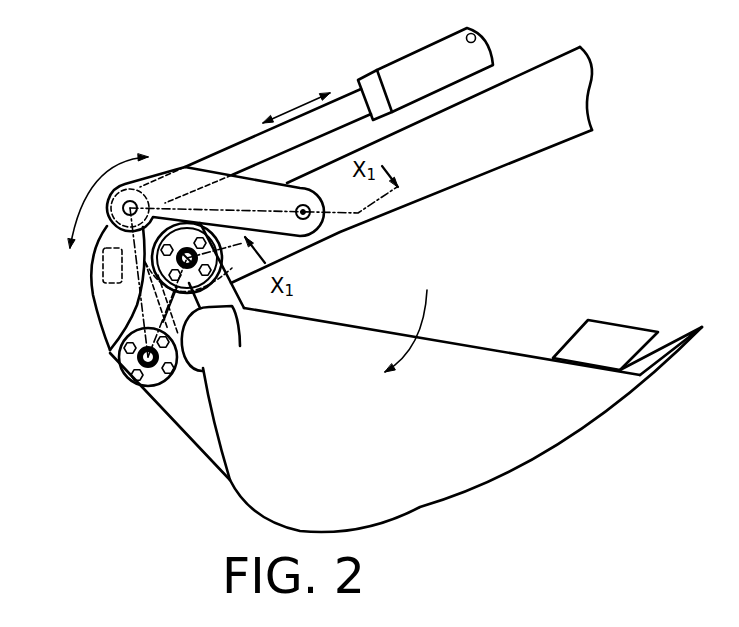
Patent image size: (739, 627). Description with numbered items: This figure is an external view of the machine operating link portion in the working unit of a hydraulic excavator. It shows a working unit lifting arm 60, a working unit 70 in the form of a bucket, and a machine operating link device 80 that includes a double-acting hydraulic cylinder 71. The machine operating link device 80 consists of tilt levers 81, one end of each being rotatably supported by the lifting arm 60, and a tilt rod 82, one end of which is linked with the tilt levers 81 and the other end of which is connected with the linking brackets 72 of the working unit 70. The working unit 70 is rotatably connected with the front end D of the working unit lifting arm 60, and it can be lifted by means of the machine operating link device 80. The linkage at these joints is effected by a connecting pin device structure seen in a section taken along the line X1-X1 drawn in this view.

The working unit lifting arm 60 is at (482, 157).
The working unit 70 is at (487, 367).
The double-acting hydraulic cylinder 71 is at (244, 153).
The linking brackets 72 is at (167, 412).
The machine operating link device 80 is at (167, 117).
The tilt levers 81 is at (184, 166).
The tilt rod 82 is at (93, 300).